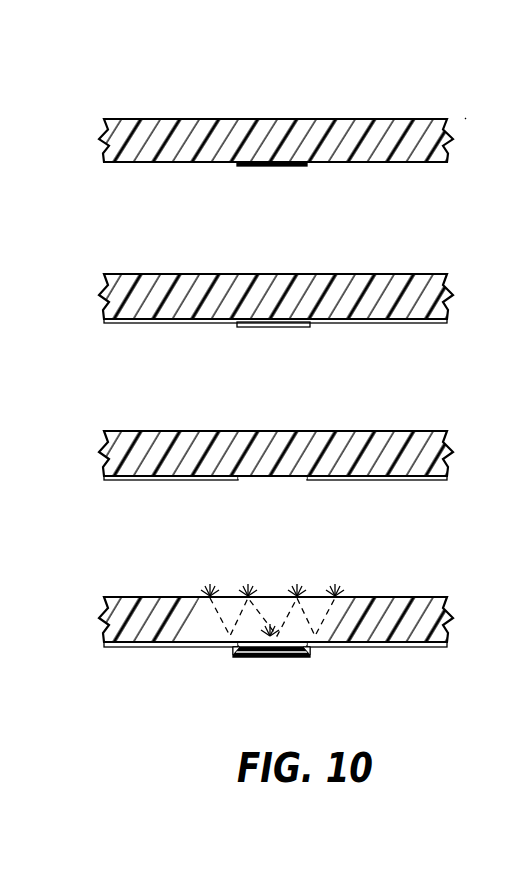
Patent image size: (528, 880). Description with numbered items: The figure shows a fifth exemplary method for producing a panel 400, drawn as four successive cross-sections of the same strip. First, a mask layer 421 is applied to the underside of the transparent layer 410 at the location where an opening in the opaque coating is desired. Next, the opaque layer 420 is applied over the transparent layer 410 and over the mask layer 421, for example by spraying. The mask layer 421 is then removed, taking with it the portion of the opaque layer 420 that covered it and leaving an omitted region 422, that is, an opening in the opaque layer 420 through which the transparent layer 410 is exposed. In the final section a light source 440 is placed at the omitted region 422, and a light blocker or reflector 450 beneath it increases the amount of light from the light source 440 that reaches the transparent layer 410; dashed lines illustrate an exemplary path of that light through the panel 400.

The panel 400 is at (466, 121).
The transparent layer 410 is at (160, 118).
The opaque layer 420 is at (390, 323).
The mask layer 421 is at (292, 167).
The omitted region 422 is at (273, 480).
The light source 440 is at (313, 652).
The light blocker or reflector 450 is at (258, 657).